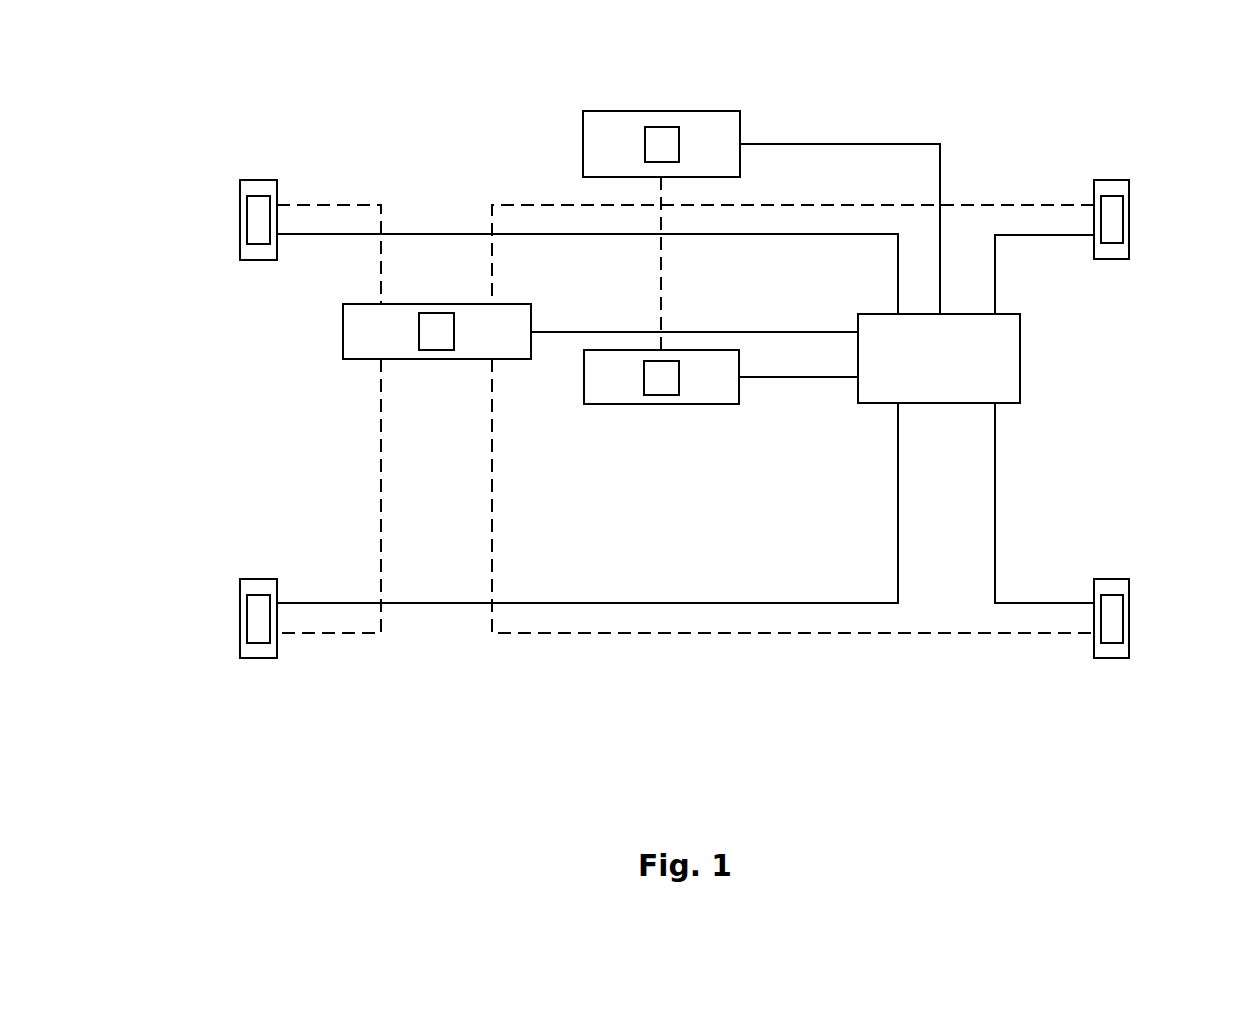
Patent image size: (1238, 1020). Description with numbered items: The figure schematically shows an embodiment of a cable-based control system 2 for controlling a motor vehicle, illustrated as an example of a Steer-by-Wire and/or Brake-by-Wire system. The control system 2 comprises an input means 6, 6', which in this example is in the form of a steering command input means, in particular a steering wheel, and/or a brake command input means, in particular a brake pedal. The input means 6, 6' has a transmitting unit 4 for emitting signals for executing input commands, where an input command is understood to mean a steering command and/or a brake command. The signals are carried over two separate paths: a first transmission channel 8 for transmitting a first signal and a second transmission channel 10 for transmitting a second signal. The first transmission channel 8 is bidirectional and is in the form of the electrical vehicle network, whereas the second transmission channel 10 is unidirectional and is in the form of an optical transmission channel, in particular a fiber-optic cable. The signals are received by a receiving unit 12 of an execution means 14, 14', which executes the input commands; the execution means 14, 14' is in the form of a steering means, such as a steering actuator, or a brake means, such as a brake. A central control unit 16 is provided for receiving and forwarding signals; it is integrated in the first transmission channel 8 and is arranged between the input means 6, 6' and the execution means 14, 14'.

The control system 2 is at (1052, 705).
The transmitting unit 4 is at (437, 340).
The input means 6 is at (661, 417).
The input means 6' is at (399, 340).
The first transmission channel 8 is at (940, 165).
The second transmission channel 10 is at (661, 265).
The receiving unit 12 is at (253, 220).
The execution means 14 is at (663, 105).
The execution means 14' is at (685, 381).
The central control unit 16 is at (1020, 357).